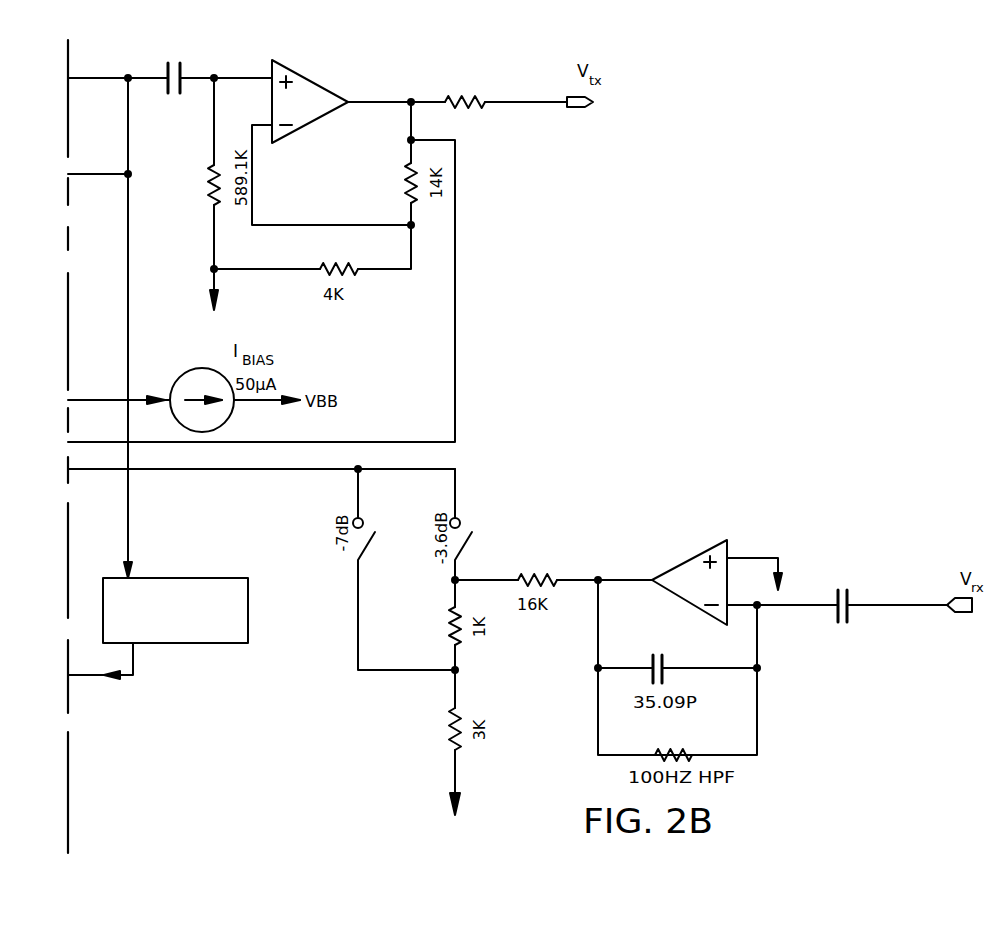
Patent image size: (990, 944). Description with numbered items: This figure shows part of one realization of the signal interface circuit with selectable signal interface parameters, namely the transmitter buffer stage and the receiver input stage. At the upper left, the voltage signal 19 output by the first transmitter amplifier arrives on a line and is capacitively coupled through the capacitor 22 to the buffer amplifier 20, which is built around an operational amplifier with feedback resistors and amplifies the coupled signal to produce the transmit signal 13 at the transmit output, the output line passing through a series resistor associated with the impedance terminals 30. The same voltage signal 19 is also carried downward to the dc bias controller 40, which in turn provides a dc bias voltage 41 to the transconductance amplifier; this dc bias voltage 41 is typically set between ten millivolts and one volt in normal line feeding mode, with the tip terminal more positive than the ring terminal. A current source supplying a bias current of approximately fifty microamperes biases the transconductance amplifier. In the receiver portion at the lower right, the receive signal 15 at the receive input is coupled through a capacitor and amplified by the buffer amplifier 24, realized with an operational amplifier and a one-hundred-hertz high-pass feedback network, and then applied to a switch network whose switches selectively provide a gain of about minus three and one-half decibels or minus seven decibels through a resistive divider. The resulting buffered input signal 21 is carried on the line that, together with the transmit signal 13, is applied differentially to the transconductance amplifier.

The transmit signal 13 is at (429, 97).
The receive signal 15 is at (881, 605).
The voltage signal 19 is at (128, 77).
The buffer amplifier 20 is at (326, 193).
The buffered input signal 21 is at (310, 471).
The capacitor 22 is at (188, 74).
The buffer amplifier 24 is at (658, 563).
The impedance terminals 30 is at (519, 113).
The dc bias controller 40 is at (203, 643).
The dc bias voltage 41 is at (77, 680).